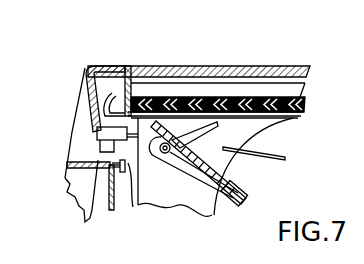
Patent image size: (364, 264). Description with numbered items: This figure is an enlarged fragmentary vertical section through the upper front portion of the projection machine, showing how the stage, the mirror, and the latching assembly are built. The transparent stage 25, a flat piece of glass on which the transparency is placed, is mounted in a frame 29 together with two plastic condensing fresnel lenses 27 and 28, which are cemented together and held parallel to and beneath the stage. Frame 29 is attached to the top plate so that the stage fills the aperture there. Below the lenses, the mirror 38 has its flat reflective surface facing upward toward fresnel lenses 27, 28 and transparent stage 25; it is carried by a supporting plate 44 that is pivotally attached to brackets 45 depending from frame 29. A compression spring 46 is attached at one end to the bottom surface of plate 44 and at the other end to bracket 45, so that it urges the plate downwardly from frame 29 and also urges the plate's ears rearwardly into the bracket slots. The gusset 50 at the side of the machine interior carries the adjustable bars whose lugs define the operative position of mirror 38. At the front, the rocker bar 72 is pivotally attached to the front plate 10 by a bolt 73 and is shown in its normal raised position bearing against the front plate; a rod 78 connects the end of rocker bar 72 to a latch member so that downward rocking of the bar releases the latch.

The front plate 10 is at (77, 179).
The transparent stage 25 is at (271, 73).
The condensing fresnel lens 27 is at (306, 113).
The condensing fresnel lens 28 is at (307, 100).
The frame 29 is at (124, 100).
The mirror 38 is at (244, 192).
The supporting plate 44 is at (238, 204).
The bracket 45 is at (203, 133).
The compression spring 46 is at (175, 158).
The gusset 50 is at (176, 206).
The rocker bar 72 is at (69, 163).
The bolt 73 is at (113, 197).
The rod 78 is at (270, 153).